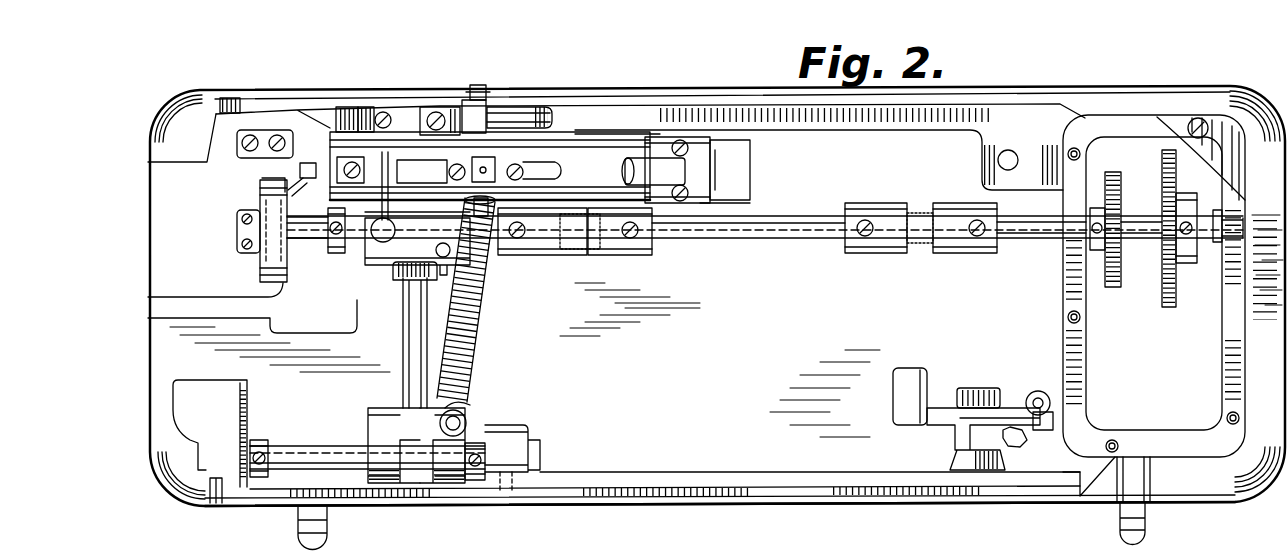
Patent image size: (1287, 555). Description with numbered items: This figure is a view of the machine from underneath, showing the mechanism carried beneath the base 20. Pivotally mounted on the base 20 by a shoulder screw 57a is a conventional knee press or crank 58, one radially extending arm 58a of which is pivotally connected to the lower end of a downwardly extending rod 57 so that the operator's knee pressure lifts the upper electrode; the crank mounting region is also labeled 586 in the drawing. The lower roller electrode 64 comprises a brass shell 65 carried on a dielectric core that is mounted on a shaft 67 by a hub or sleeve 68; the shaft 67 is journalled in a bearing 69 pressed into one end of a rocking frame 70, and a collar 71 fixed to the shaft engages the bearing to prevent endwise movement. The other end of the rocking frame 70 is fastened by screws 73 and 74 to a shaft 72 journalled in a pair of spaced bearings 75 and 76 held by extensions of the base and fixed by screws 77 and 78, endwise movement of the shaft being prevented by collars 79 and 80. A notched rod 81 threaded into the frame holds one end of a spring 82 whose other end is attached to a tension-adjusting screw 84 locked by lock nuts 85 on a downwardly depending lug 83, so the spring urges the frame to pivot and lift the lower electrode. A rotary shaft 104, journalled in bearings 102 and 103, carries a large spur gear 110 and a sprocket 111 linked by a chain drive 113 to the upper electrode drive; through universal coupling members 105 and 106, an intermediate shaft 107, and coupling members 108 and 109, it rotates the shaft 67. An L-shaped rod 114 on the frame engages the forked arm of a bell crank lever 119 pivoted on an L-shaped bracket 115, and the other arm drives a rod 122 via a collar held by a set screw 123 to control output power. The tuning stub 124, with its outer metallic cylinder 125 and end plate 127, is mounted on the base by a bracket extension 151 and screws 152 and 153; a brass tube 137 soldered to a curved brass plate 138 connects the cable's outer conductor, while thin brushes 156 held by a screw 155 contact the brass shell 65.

The base 20 is at (716, 318).
The rod 57 is at (1045, 390).
The shoulder screw 57a is at (980, 388).
The knee press or crank 58 is at (955, 408).
The arm 58a is at (1012, 427).
The block 586 is at (890, 376).
The lower roller electrode 64 is at (262, 272).
The brass shell 65 is at (262, 183).
The shaft 67 is at (303, 242).
The hub or sleeve 68 is at (237, 226).
The bearing 69 is at (412, 262).
The rocking frame 70 is at (403, 356).
The collar 71 is at (336, 253).
The shaft 72 is at (335, 440).
The screw 73 is at (390, 485).
The screw 74 is at (450, 485).
The bearing 75 is at (198, 447).
The bearing 76 is at (540, 442).
The screw 77 is at (218, 498).
The screw 78 is at (520, 495).
The collar 79 is at (265, 442).
The collar 80 is at (485, 445).
The notched rod 81 is at (468, 410).
The spring 82 is at (488, 318).
The lug or projection 83 is at (548, 136).
The tension-adjusting screw 84 is at (488, 96).
The lock nuts 85 is at (505, 118).
The bearing 102 is at (1072, 248).
The bearing 103 is at (1228, 255).
The rotary shaft 104 is at (1137, 220).
The universal coupling member 105 is at (972, 255).
The universal coupling member 106 is at (882, 255).
The shaft 107 is at (765, 242).
The universal coupling member 108 is at (640, 257).
The universal coupling member 109 is at (540, 257).
The large spur gear 110 is at (1170, 308).
The sprocket 111 is at (1112, 288).
The chain drive 113 is at (1122, 255).
The L-shaped rod 114 is at (438, 110).
The L-shaped bracket 115 is at (352, 108).
The bell crank lever 119 is at (372, 108).
The rod 122 is at (485, 100).
The set screw 123 is at (350, 160).
The tuning stub 124 is at (603, 138).
The outer metallic cylinder or conductor 125 is at (742, 208).
The metallic plate 127 is at (755, 186).
The brass tube 137 is at (658, 160).
The curved brass plate 138 is at (725, 160).
The bracket extension 151 is at (280, 136).
The screw 152 is at (237, 152).
The screw 153 is at (268, 136).
The screw 155 is at (310, 159).
The brushes 156 is at (302, 186).